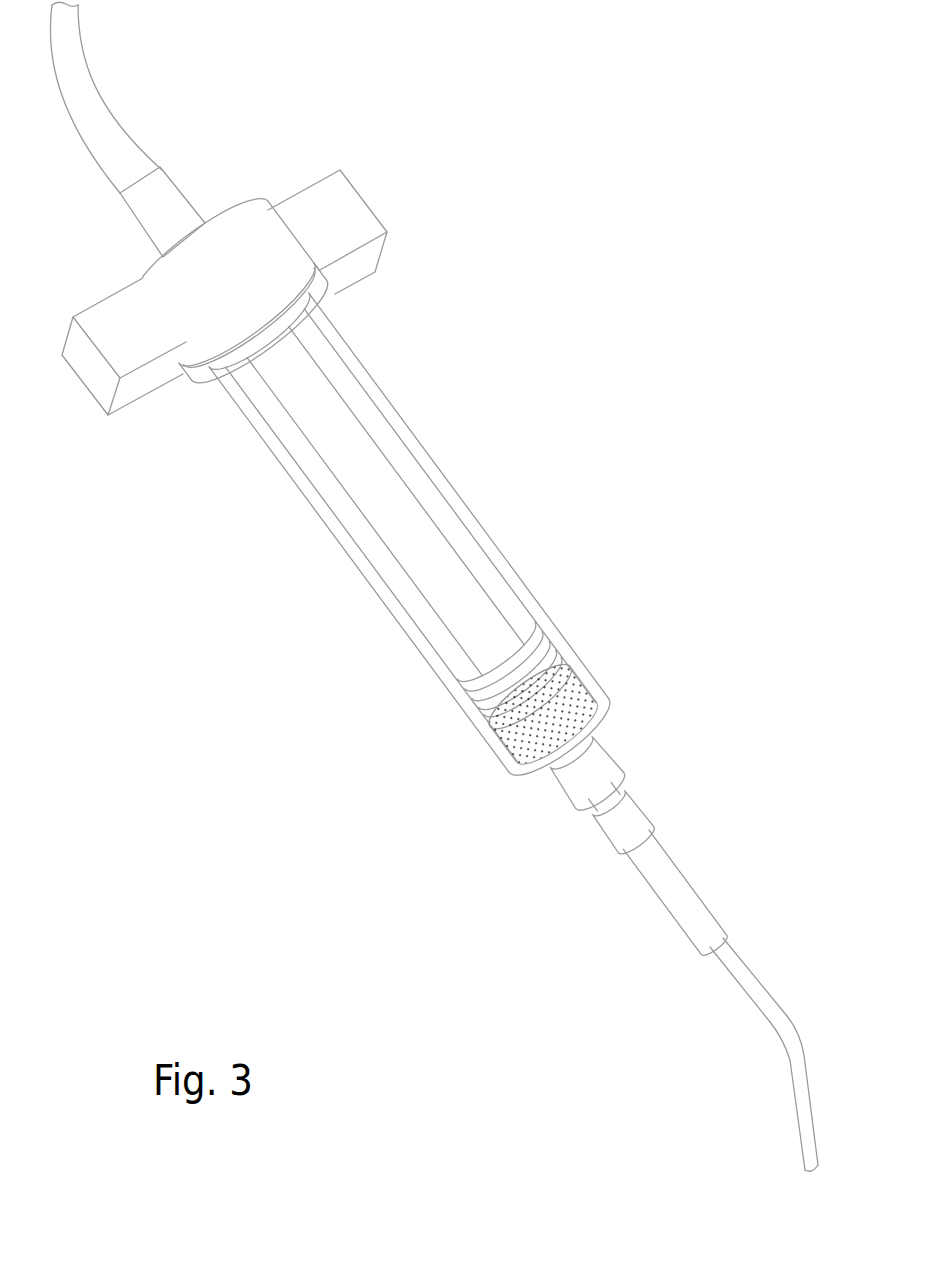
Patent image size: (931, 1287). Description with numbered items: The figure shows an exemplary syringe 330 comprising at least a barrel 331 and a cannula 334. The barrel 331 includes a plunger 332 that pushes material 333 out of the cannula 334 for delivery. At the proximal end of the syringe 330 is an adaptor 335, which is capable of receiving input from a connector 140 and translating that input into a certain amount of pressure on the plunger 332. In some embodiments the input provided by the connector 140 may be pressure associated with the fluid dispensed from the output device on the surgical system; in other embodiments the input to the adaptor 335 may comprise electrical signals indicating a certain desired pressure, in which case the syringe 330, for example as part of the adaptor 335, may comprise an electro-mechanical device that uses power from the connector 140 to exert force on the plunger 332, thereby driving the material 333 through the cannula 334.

The connector 140 is at (100, 104).
The syringe 330 is at (440, 670).
The barrel 331 is at (496, 550).
The plunger 332 is at (540, 647).
The material 333 is at (565, 698).
The cannula 334 is at (795, 1110).
The adaptor 335 is at (358, 212).